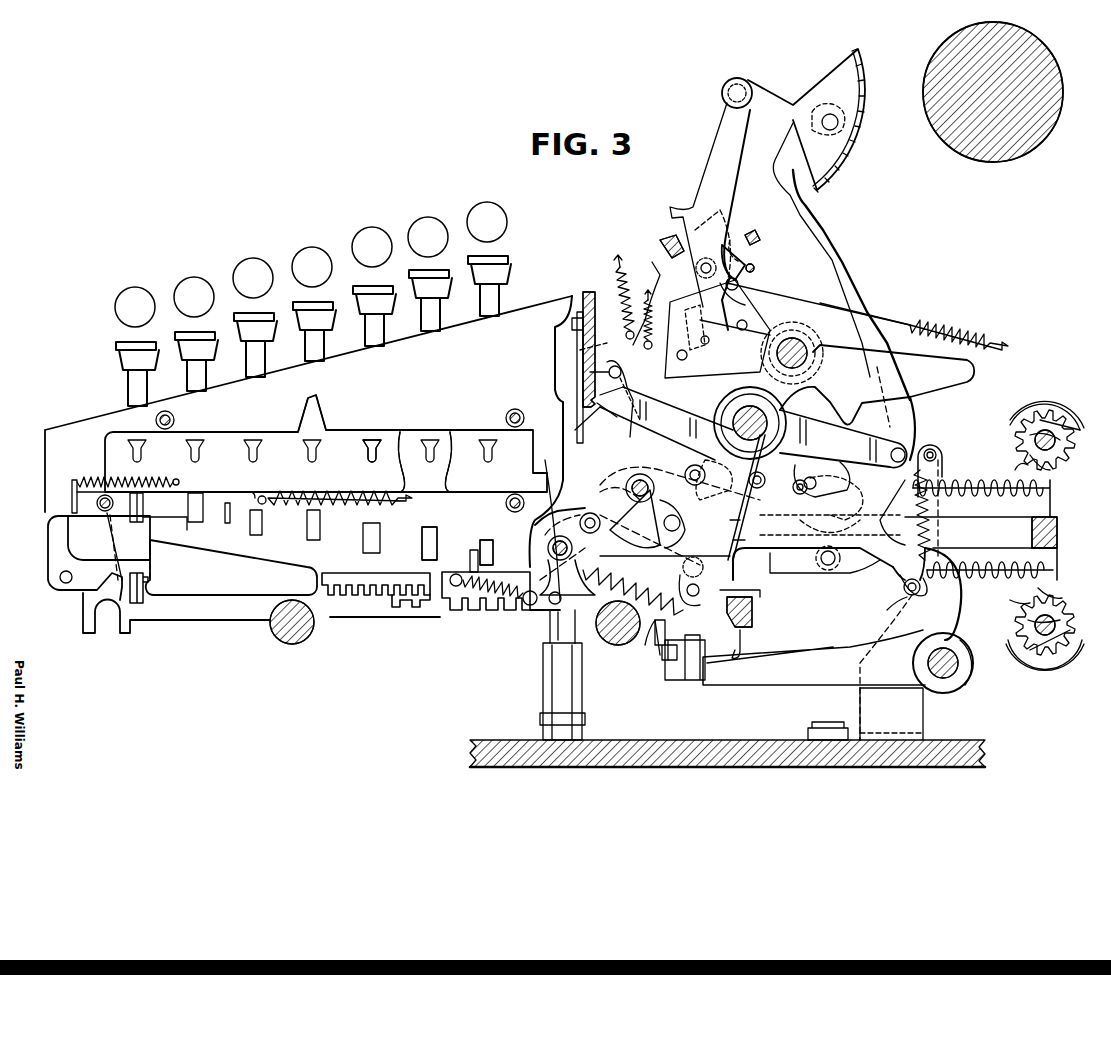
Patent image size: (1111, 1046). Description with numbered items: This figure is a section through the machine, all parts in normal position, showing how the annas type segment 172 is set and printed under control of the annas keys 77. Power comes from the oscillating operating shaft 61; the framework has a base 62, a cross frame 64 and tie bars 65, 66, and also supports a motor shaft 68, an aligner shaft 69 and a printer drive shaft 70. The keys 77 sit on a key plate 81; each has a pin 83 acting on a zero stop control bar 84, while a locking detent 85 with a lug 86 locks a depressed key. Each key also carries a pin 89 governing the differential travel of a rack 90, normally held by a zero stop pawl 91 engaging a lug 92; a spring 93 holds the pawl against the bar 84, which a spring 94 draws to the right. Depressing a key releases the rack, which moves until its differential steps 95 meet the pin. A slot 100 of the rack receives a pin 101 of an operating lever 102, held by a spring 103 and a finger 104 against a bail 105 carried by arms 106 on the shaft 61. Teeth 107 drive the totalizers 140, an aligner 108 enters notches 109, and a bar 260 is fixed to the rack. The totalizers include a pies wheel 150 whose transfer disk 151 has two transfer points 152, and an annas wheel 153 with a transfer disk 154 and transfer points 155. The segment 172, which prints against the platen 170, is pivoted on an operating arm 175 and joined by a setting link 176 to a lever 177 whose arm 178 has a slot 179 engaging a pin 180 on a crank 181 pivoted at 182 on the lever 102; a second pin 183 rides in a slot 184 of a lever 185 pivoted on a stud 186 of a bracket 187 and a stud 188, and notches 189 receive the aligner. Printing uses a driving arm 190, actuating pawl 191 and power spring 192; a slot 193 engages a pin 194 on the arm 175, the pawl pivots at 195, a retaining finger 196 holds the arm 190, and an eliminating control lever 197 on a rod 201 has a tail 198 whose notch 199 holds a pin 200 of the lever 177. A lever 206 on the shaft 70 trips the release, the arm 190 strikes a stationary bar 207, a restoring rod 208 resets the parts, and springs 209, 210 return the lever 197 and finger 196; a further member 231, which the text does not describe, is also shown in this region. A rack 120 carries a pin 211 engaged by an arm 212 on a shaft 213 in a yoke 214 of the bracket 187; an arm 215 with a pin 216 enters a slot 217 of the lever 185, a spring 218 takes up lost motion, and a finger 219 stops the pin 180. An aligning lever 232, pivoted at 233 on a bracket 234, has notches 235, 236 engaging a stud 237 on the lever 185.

The operating shaft 61 is at (768, 420).
The base 62 is at (520, 748).
The cross frame 64 is at (583, 295).
The tie bar 65 is at (1050, 528).
The tie bar 66 is at (290, 638).
The shaft 68 is at (618, 645).
The aligner shaft 69 is at (938, 690).
The printer drive shaft 70 is at (805, 340).
The annas key 77 is at (500, 256).
The key plate 81 is at (112, 432).
The pin 83 is at (372, 440).
The zero stop control bar 84 is at (280, 432).
The locking detent 85 is at (415, 438).
The lug 86 is at (445, 440).
The pin 89 is at (437, 538).
The rack 90 is at (200, 614).
The zero stop pawl 91 is at (58, 527).
The lug 92 is at (150, 584).
The spring 93 is at (97, 480).
The spring 94 is at (348, 503).
The differential steps 95 is at (214, 512).
The slot 100 is at (775, 587).
The pin 101 is at (765, 603).
The operating lever 102 is at (738, 540).
The spring 103 is at (648, 640).
The finger 104 is at (760, 668).
The bail 105 is at (760, 630).
The arm 106 is at (770, 572).
The teeth 107 is at (1050, 508).
The aligner 108 is at (672, 688).
The notches 109 is at (600, 575).
The rack 120 is at (490, 598).
The totalizer 140 is at (1088, 385).
The 24-tooth wheel 150 is at (1028, 403).
The transfer disk 151 is at (1040, 420).
The transfer points 152 is at (1072, 410).
The annas wheel 153 is at (1030, 435).
The transfer disk 154 is at (1030, 455).
The transfer points 155 is at (1030, 478).
The platen 170 is at (975, 158).
The annas type segment 172 is at (833, 76).
The operating arm 175 is at (722, 120).
The setting link 176 is at (838, 262).
The differentially adjustable lever 177 is at (830, 412).
The arm 178 is at (738, 521).
The slot 179 is at (670, 555).
The pin 180 is at (680, 523).
The crank 181 is at (712, 465).
The pivot 182 is at (700, 470).
The pin 183 is at (770, 495).
The slot 184 is at (805, 455).
The lever 185 is at (690, 470).
The stud 186 is at (640, 470).
The bracket 187 is at (568, 460).
The stud 188 is at (552, 700).
The aligning notches 189 is at (650, 663).
The driving arm 190 is at (745, 262).
The actuating pawl 191 is at (745, 314).
The power spring 192 is at (955, 325).
The slot 193 is at (730, 240).
The pin 194 is at (705, 262).
The pivot 195 is at (738, 284).
The retaining finger 196 is at (662, 372).
The eliminating control lever 197 is at (652, 262).
The tail 198 is at (597, 403).
The notch 199 is at (580, 350).
The pin 200 is at (590, 372).
The rod 201 is at (625, 362).
The lever 206 is at (850, 330).
The stationary bar 207 is at (757, 237).
The restoring rod 208 is at (755, 269).
The spring 209 is at (618, 274).
The spring 210 is at (650, 305).
The pin 211 is at (550, 630).
The arm 212 is at (545, 605).
The shaft 213 is at (552, 550).
The yoke 214 is at (535, 522).
The arm 215 is at (600, 515).
The pin 216 is at (598, 505).
The slot 217 is at (600, 485).
The spring 218 is at (478, 572).
The finger 219 is at (636, 476).
The block 231 is at (668, 240).
The lever 232 is at (860, 480).
The pivot 233 is at (835, 560).
The bracket 234 is at (890, 628).
The notch 235 is at (836, 478).
The notch 236 is at (845, 527).
The stud 237 is at (840, 495).
The bar 260 is at (355, 597).